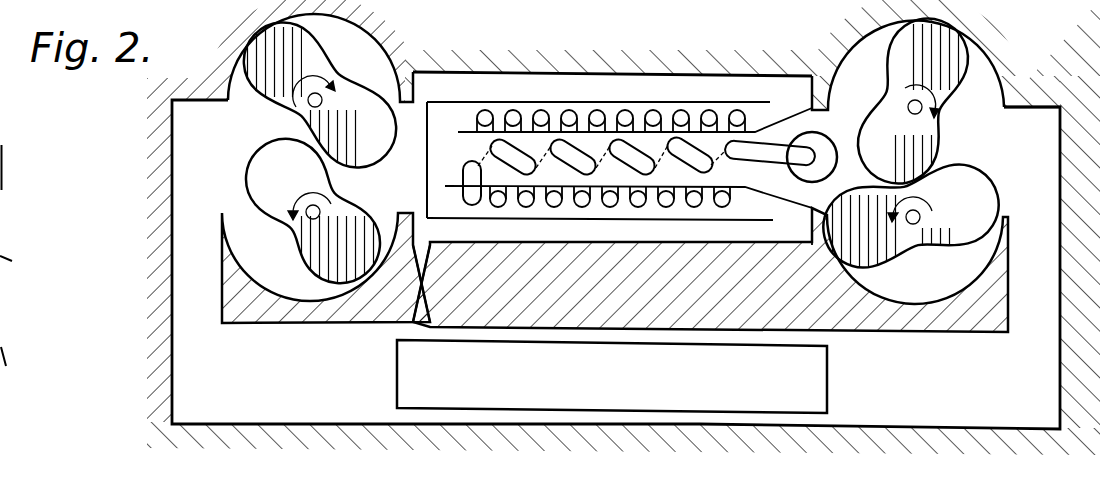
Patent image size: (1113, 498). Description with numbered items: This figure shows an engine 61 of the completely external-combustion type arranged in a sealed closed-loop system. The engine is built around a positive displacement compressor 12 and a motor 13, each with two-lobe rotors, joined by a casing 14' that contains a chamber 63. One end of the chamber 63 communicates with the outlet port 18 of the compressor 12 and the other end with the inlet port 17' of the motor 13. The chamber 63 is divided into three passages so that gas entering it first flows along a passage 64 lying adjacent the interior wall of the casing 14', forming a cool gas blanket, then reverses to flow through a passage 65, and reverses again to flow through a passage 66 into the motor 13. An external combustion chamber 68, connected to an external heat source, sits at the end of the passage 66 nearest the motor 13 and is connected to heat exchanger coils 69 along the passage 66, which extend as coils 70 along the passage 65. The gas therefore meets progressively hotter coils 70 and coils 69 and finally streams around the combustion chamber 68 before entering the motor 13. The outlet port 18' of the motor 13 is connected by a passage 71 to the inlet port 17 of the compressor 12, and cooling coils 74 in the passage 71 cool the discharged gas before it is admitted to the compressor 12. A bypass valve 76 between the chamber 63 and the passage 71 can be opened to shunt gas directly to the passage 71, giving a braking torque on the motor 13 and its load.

The positive displacement compressor 12 is at (353, 287).
The motor 13 is at (937, 300).
The casing 14' is at (710, 270).
The inlet port of the compressor 17 is at (293, 82).
The inlet port of the motor 17' is at (901, 62).
The outlet port of the compressor 18 is at (414, 63).
The outlet port of the motor 18' is at (1030, 128).
The engine 61 is at (673, 16).
The chamber 63 is at (417, 176).
The passage 64 is at (673, 88).
The passage 65 is at (453, 117).
The passage 66 is at (466, 161).
The external combustion chamber 68 is at (826, 136).
The heat exchanger coils 69 is at (760, 142).
The coils 70 is at (539, 110).
The passage 71 is at (207, 300).
The cooling coils 74 is at (637, 385).
The bypass valve 76 is at (433, 261).